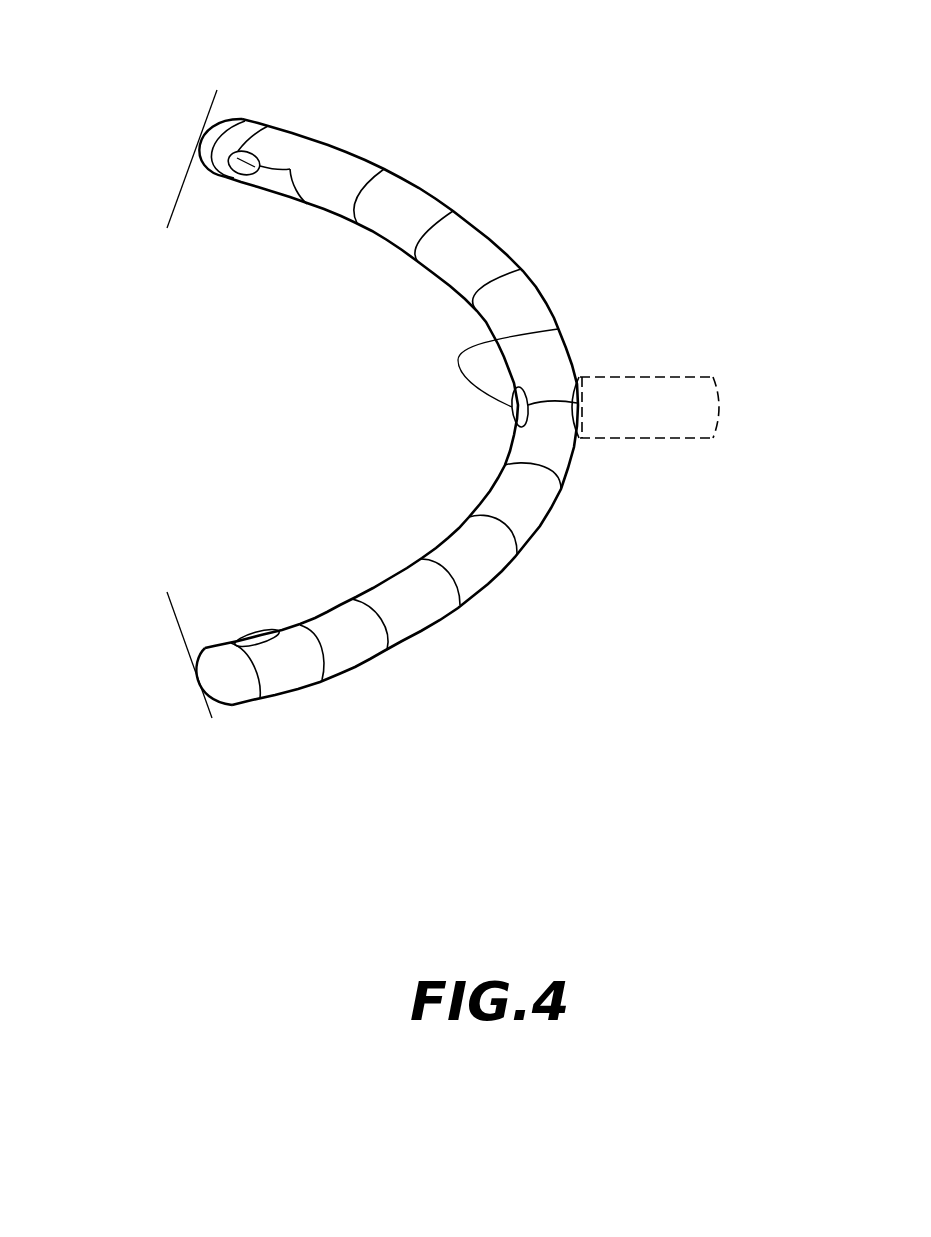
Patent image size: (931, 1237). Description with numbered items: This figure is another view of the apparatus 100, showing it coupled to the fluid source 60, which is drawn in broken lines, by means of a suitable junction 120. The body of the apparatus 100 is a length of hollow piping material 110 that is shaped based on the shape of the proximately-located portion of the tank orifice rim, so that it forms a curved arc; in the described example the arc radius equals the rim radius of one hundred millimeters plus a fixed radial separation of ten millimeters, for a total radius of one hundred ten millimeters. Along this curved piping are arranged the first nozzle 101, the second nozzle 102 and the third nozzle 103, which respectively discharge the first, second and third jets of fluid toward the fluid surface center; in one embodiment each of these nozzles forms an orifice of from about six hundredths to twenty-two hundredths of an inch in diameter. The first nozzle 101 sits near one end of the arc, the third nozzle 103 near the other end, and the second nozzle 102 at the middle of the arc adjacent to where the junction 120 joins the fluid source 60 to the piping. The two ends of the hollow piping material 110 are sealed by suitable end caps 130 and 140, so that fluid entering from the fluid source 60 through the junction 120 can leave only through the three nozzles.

The apparatus 100 is at (655, 198).
The first nozzle 101 is at (290, 169).
The second nozzle 102 is at (470, 346).
The third nozzle 103 is at (263, 635).
The length of hollow piping material 110 is at (177, 213).
The junction 120 is at (576, 426).
The end cap 130 is at (200, 141).
The end cap 140 is at (200, 684).
The fluid source 60 is at (713, 377).